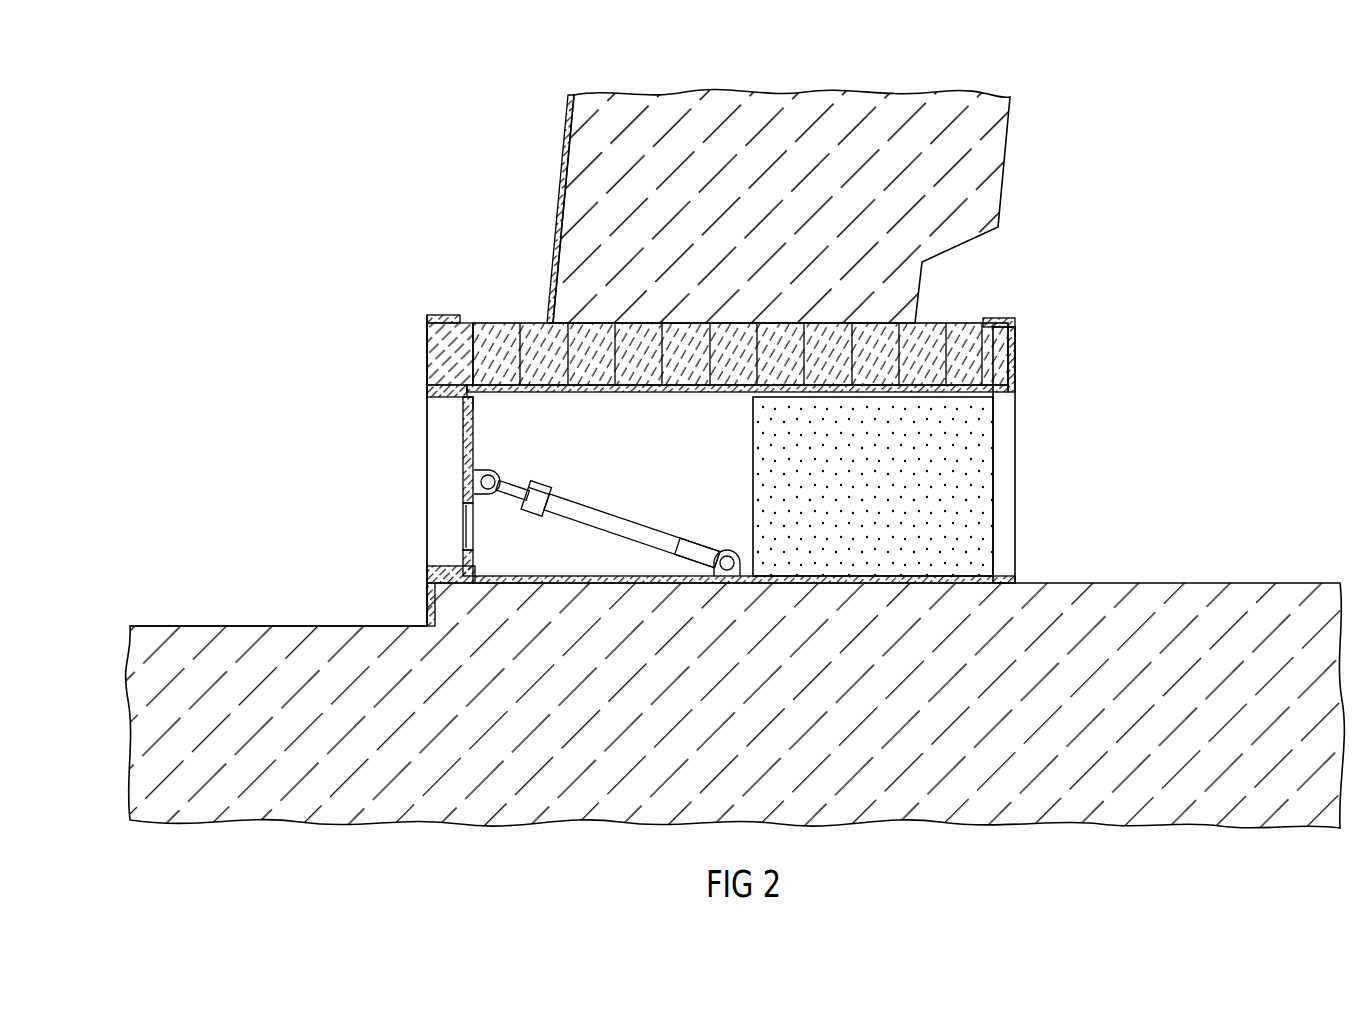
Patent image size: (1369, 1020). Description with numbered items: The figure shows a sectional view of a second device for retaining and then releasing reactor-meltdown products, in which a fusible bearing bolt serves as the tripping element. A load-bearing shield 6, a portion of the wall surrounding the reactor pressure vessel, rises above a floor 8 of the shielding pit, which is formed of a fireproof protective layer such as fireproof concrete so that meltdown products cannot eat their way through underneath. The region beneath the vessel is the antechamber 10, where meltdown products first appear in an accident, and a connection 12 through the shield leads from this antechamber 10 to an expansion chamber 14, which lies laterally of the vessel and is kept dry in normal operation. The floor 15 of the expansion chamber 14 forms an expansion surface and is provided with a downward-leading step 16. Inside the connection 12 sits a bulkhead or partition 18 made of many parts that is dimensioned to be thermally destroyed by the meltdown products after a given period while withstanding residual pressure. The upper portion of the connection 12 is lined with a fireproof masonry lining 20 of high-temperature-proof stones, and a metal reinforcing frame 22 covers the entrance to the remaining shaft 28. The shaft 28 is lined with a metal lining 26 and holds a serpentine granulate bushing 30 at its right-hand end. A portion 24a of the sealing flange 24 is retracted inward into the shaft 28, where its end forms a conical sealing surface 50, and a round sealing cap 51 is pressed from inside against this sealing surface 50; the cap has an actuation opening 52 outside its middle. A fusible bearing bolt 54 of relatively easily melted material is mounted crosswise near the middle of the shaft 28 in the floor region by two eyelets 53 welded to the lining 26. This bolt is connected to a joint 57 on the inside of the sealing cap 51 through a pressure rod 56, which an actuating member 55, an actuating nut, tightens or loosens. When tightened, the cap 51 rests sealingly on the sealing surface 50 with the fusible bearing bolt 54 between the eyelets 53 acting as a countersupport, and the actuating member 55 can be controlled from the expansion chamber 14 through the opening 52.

The load-bearing shield 6 is at (980, 128).
The floor 8 is at (1240, 622).
The antechamber 10 is at (1188, 493).
The connection 12 is at (590, 323).
The expansion chamber 14 is at (262, 569).
The floor of the expansion chamber 15 is at (160, 626).
The downward-leading step 16 is at (424, 608).
The bulkhead or partition 18 is at (437, 306).
The fireproof masonry lining 20 is at (925, 340).
The reinforcing frame 22 is at (1012, 338).
The sealing flange 24 is at (427, 345).
The portion of the sealing flange 24a is at (430, 395).
The metal lining 26 is at (538, 383).
The shaft 28 is at (665, 430).
The serpentine granulate bushing 30 is at (983, 440).
The conical sealing surface 50 is at (465, 399).
The round sealing cap 51 is at (466, 455).
The actuation opening 52 is at (466, 520).
The eyelets 53 is at (728, 551).
The fusible bearing bolt 54 is at (702, 545).
The actuating member 55 is at (543, 478).
The pressure rod 56 is at (598, 523).
The joint 57 is at (490, 470).